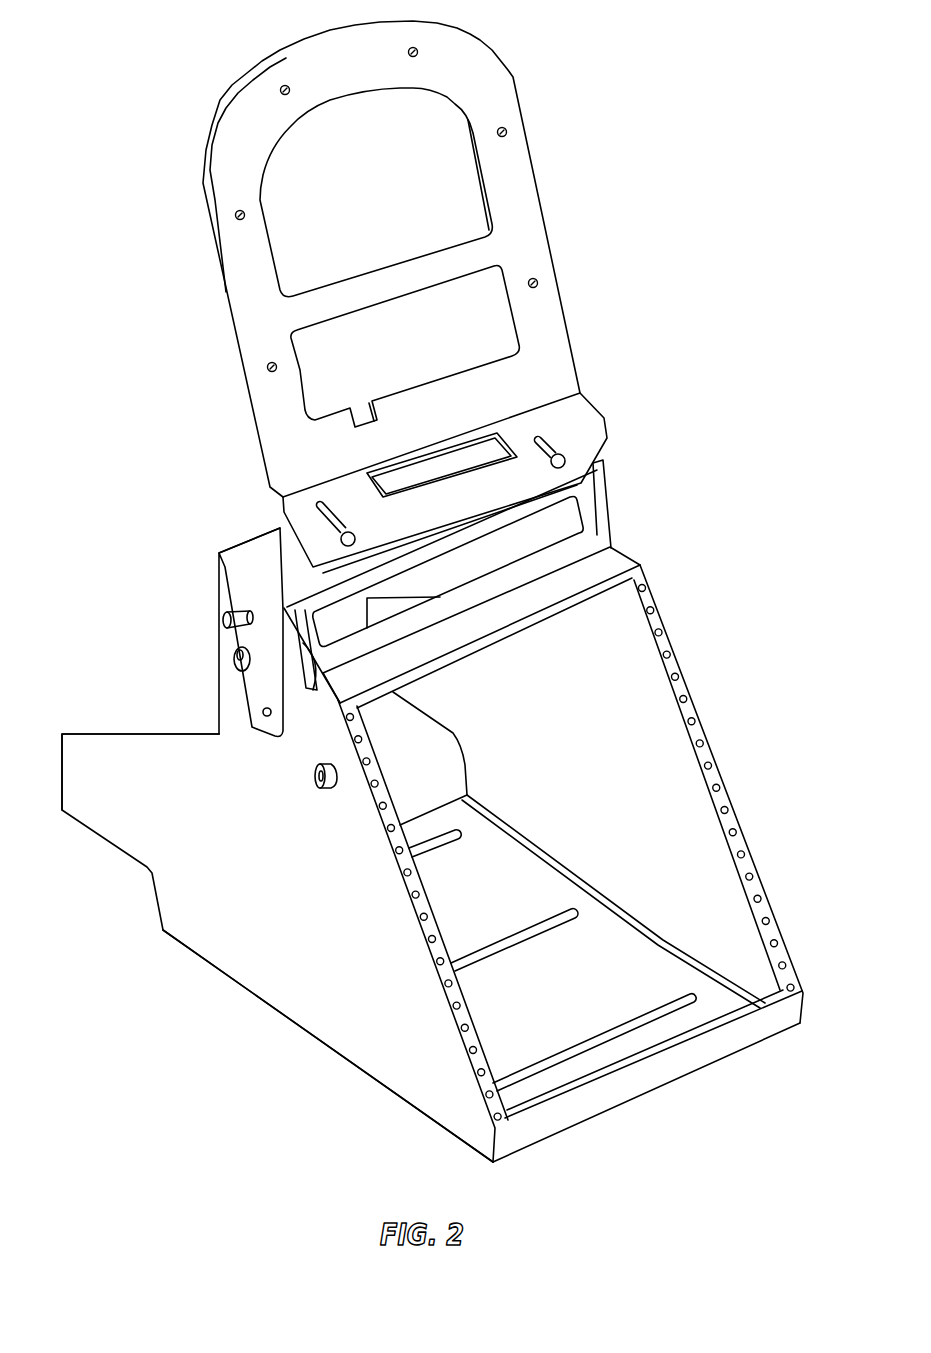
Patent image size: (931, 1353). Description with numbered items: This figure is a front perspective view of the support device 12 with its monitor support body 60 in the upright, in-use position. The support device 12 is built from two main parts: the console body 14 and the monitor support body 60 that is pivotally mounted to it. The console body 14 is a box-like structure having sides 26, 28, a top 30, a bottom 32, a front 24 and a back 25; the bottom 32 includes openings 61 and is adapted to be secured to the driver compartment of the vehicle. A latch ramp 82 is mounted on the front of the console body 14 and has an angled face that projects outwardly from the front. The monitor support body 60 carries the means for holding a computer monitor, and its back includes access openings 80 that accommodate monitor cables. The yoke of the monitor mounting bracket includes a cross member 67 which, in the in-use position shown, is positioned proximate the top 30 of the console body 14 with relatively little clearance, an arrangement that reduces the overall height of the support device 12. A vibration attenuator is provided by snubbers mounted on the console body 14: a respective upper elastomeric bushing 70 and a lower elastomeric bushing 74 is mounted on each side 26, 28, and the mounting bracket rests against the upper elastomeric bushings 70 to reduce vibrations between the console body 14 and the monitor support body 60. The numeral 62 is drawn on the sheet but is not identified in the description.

The support device 12 is at (724, 307).
The console body 14 is at (151, 893).
The front 24 is at (712, 1022).
The back 25 is at (154, 716).
The side 26 is at (352, 1050).
The side 28 is at (635, 660).
The top 30 is at (217, 552).
The bottom 32 is at (630, 937).
The monitor support body 60 is at (224, 297).
The openings 61 is at (427, 853).
The side wall 62 is at (403, 872).
The cross member 67 is at (257, 563).
The upper elastomeric bushings 70 is at (235, 657).
The lower elastomeric bushings 74 is at (317, 782).
The access openings 80 is at (507, 277).
The latch ramp 82 is at (317, 677).